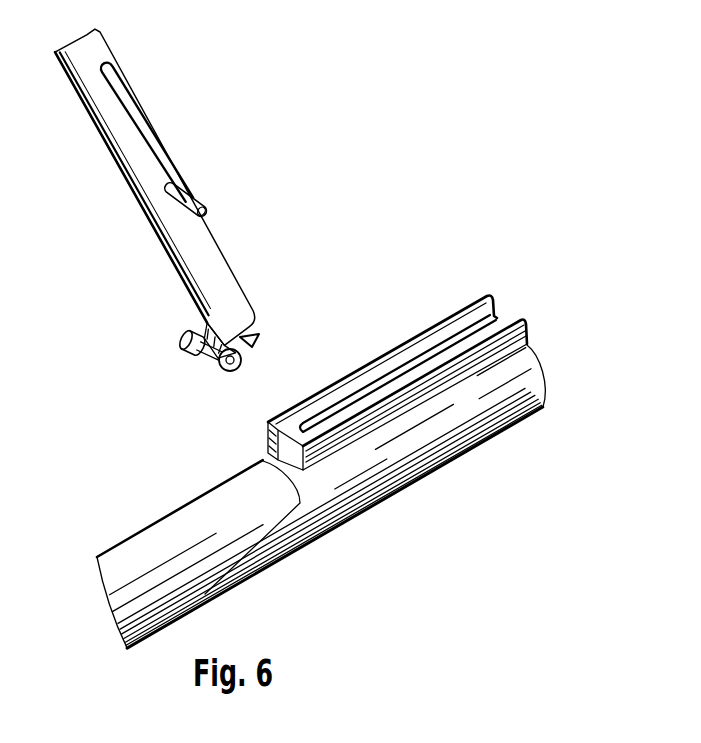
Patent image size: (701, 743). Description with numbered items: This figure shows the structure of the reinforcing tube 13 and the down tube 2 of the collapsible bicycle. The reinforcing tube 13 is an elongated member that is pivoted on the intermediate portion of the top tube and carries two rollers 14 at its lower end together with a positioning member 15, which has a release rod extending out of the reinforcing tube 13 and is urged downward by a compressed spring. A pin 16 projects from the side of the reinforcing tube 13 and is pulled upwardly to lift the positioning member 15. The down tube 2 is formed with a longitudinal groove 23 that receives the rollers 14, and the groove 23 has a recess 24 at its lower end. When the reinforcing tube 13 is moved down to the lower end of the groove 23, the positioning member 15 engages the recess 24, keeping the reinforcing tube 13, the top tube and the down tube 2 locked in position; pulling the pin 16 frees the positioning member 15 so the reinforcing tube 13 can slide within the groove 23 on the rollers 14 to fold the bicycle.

The down tube 2 is at (225, 505).
The reinforcing tube 13 is at (210, 257).
The rollers 14 is at (217, 363).
The positioning member 15 is at (258, 338).
The pin 16 is at (193, 196).
The longitudinal groove 23 is at (402, 350).
The recess 24 is at (306, 422).